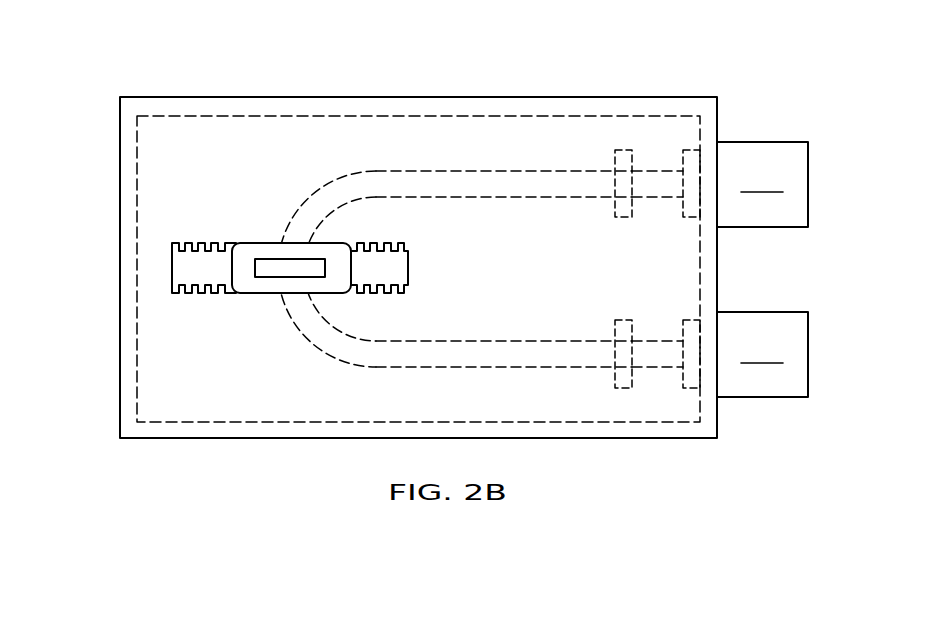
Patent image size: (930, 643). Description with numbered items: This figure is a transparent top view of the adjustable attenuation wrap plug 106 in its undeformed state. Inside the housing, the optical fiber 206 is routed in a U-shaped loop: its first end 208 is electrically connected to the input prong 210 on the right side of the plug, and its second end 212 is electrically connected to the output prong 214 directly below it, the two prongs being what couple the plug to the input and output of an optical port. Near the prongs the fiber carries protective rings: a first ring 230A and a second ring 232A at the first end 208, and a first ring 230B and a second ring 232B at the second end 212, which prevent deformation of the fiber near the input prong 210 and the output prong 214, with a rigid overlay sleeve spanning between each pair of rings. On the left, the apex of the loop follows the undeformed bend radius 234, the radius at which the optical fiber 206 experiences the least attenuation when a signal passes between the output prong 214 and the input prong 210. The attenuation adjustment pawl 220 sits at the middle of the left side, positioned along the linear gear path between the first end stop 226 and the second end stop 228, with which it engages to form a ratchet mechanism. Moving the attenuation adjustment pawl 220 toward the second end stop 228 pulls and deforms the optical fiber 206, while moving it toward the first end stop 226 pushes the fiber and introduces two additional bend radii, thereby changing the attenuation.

The adjustable attenuation wrap plug 106 is at (140, 67).
The optical fiber 206 is at (473, 183).
The first end 208 is at (657, 182).
The input prong 210 is at (762, 184).
The second end 212 is at (658, 357).
The output prong 214 is at (762, 354).
The attenuation adjustment pawl 220 is at (263, 283).
The first end stop 226 is at (408, 268).
The second end stop 228 is at (172, 272).
The first ring 230A is at (615, 203).
The first ring 230B is at (615, 327).
The second ring 232A is at (683, 205).
The second ring 232B is at (692, 333).
The undeformed bend radius 234 is at (313, 208).